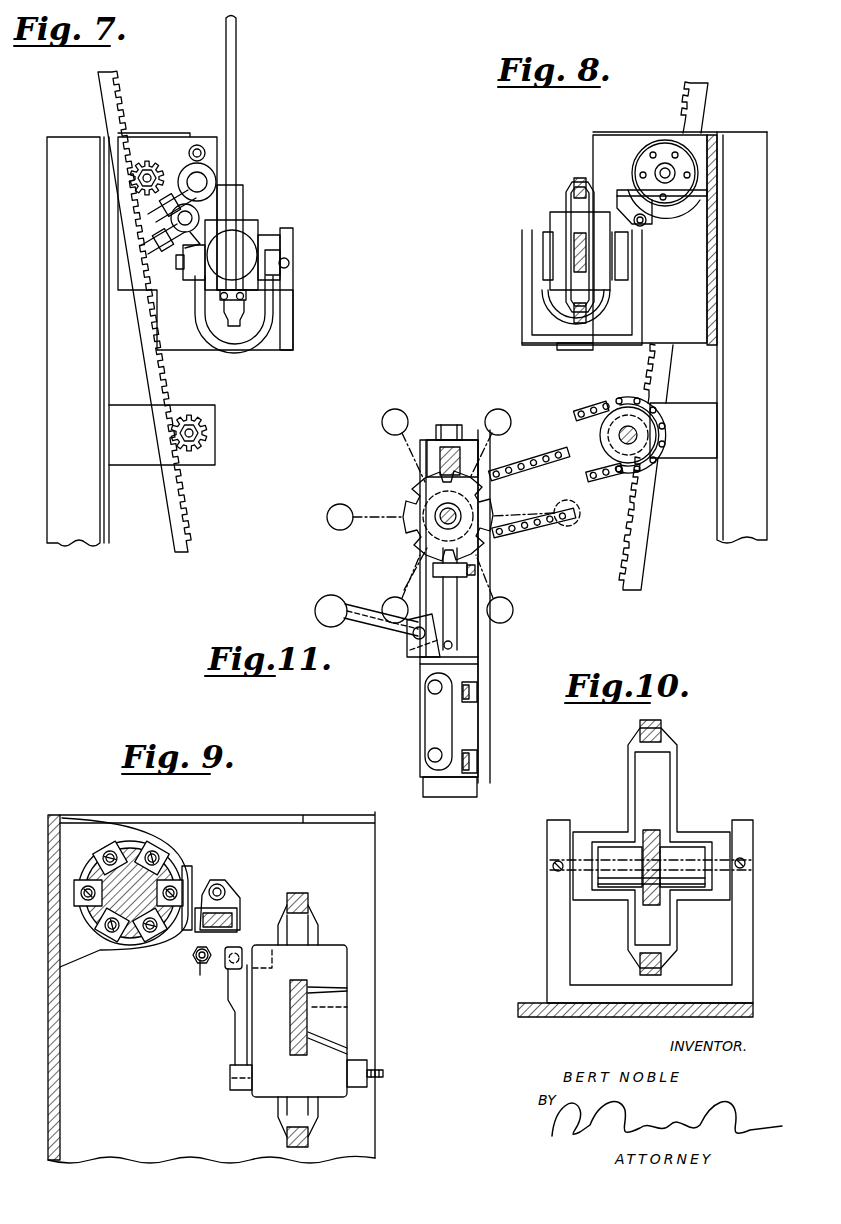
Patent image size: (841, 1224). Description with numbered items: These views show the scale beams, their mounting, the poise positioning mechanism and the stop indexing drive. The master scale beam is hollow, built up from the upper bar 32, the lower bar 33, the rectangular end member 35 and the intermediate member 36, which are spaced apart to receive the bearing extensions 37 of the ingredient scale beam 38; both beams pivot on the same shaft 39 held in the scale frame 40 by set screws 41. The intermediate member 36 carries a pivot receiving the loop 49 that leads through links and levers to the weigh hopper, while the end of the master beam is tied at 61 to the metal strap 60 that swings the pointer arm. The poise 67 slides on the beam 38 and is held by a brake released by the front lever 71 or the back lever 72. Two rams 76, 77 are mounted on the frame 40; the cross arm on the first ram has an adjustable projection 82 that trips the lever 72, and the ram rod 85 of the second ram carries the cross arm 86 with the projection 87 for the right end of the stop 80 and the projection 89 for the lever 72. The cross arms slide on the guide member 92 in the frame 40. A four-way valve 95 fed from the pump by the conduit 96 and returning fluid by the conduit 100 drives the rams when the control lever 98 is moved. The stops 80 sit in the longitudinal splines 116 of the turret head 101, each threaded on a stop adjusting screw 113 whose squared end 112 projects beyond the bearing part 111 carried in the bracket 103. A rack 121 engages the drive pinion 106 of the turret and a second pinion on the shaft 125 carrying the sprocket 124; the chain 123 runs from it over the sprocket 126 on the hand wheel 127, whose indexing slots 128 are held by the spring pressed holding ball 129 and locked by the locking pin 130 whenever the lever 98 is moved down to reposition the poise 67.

In FIG. 8, the upper bar 32 is at (573, 178).
In FIG. 9, the upper bar 32 is at (309, 900).
In FIG. 10, the upper bar 32 is at (663, 727).
In FIG. 9, the lower bar 33 is at (310, 1140).
In FIG. 10, the lower bar 33 is at (662, 970).
In FIG. 7, the end member 35 is at (244, 193).
In FIG. 7, the intermediate member 36 is at (258, 225).
In FIG. 8, the intermediate member 36 is at (569, 200).
In FIG. 10, the intermediate member 36 is at (678, 783).
In FIG. 10, the bearing extensions 37 is at (616, 852).
In FIG. 8, the ingredient scale beam 38 is at (575, 258).
In FIG. 9, the ingredient scale beam 38 is at (298, 1012).
In FIG. 10, the ingredient scale beam 38 is at (651, 829).
In FIG. 7, the shaft 39 is at (282, 258).
In FIG. 10, the shaft 39 is at (597, 881).
In FIG. 7, the scale frame 40 is at (292, 283).
In FIG. 8, the scale frame 40 is at (718, 238).
In FIG. 11, the scale frame 40 is at (486, 683).
In FIG. 10, the scale frame 40 is at (558, 938).
In FIG. 10, the set screws 41 is at (553, 868).
In FIG. 7, the loop 49 is at (238, 345).
In FIG. 8, the loop 49 is at (580, 350).
In FIG. 7, the metal strap 60 is at (238, 67).
In FIG. 7, the strap attachment point 61 is at (246, 295).
In FIG. 8, the poise 67 is at (553, 222).
In FIG. 9, the poise 67 is at (340, 971).
In FIG. 9, the release lever 71 is at (385, 1075).
In FIG. 9, the release lever 72 is at (240, 1040).
In FIG. 7, the ram 76 is at (207, 180).
In FIG. 7, the ram 77 is at (184, 242).
In FIG. 9, the stop 80 is at (191, 881).
In FIG. 9, the adjustable projection 82 is at (224, 891).
In FIG. 9, the ram rod 85 is at (200, 964).
In FIG. 9, the cross arm 86 is at (193, 951).
In FIG. 9, the projection 87 is at (188, 868).
In FIG. 9, the projection 89 is at (222, 973).
In FIG. 9, the guide member 92 is at (233, 917).
In FIG. 11, the valve 95 is at (430, 718).
In FIG. 11, the conduit 96 is at (428, 688).
In FIG. 11, the control lever 98 is at (367, 603).
In FIG. 11, the conduit 100 is at (428, 757).
In FIG. 9, the turret head 101 is at (150, 845).
In FIG. 8, the bracket 103 is at (678, 205).
In FIG. 7, the drive pinion 106 is at (143, 165).
In FIG. 8, the bearing part 111 is at (643, 163).
In FIG. 8, the squared ends 112 is at (654, 150).
In FIG. 9, the stop adjusting screws 113 is at (154, 850).
In FIG. 9, the longitudinal splines 116 is at (118, 843).
In FIG. 7, the rack 121 is at (172, 500).
In FIG. 8, the rack 121 is at (709, 99).
In FIG. 11, the chain 123 is at (592, 409).
In FIG. 11, the sprocket 124 is at (606, 433).
In FIG. 11, the shaft 125 is at (640, 430).
In FIG. 11, the sprocket 126 is at (386, 537).
In FIG. 11, the hand wheel 127 is at (344, 502).
In FIG. 11, the indexing slots 128 is at (482, 496).
In FIG. 11, the spring pressed holding ball 129 is at (462, 465).
In FIG. 11, the locking pin 130 is at (455, 603).